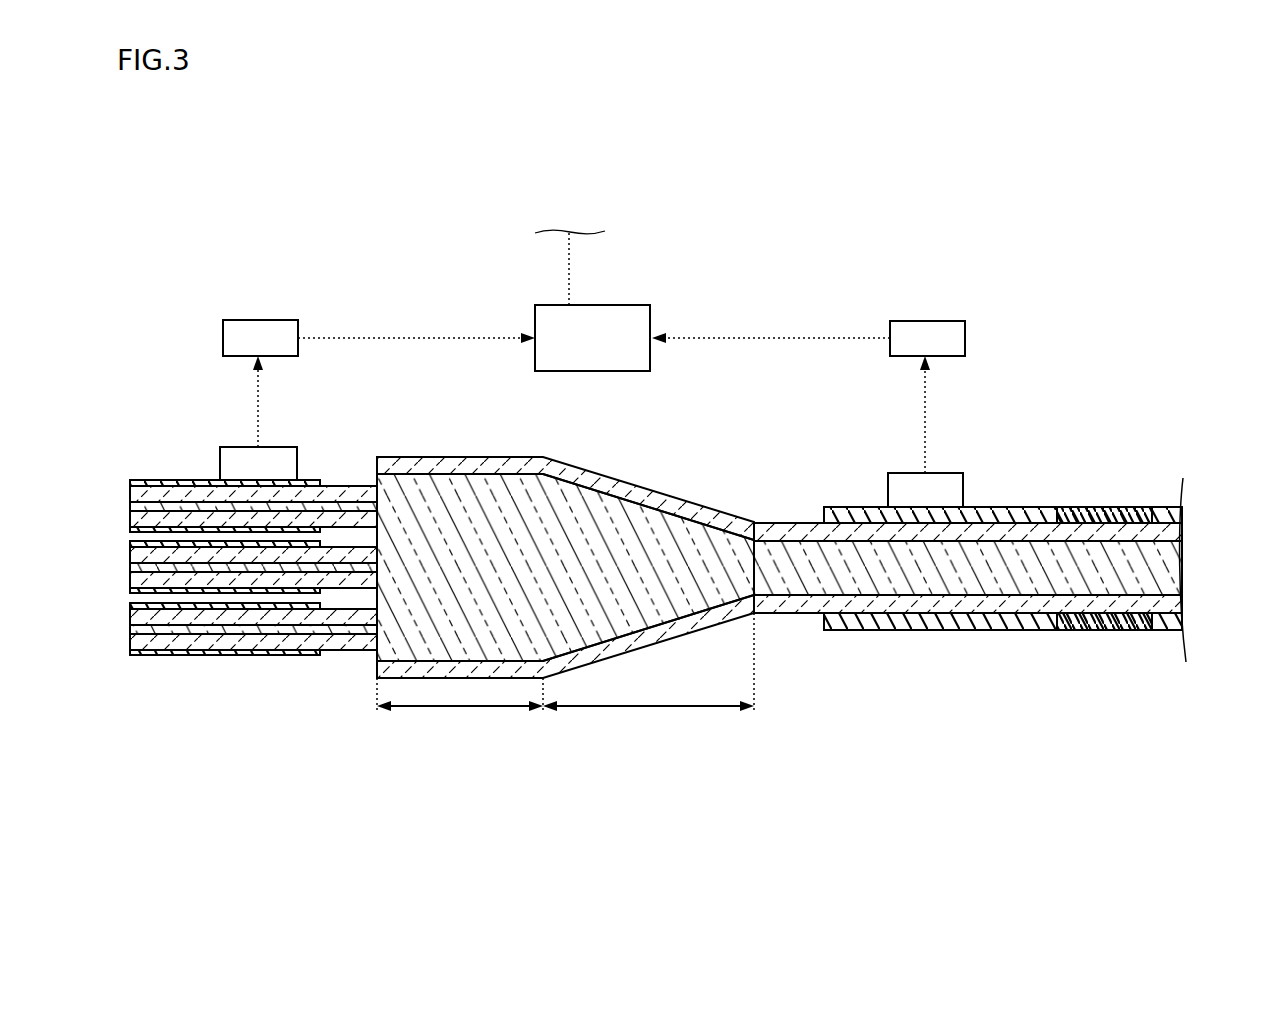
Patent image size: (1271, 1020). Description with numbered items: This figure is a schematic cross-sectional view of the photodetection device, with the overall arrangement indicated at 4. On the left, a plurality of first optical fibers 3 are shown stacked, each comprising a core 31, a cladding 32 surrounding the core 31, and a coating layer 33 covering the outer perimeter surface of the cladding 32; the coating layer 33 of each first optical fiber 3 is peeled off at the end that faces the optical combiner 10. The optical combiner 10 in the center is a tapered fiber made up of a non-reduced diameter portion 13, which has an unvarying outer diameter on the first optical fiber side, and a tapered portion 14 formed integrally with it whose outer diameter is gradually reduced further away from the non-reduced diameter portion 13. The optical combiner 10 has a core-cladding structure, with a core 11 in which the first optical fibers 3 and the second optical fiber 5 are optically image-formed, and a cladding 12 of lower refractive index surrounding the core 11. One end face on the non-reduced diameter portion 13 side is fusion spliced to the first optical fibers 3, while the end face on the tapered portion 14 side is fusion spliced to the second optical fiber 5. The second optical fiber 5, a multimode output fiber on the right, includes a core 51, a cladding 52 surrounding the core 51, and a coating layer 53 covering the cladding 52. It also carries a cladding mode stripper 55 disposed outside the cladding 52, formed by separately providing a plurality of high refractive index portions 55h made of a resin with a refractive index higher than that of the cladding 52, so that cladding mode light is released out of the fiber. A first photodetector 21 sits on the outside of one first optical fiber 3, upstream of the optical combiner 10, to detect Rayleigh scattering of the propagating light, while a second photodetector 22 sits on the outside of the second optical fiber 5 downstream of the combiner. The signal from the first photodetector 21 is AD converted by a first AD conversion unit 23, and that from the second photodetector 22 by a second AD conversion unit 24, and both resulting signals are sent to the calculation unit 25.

The first optical fiber 3 is at (253, 654).
The core 31 is at (265, 633).
The cladding 32 is at (218, 642).
The coating layer 33 is at (165, 655).
The optical fiber connection structure 4 is at (1087, 223).
The second optical fiber 5 is at (970, 609).
The core 51 is at (985, 578).
The cladding 52 is at (937, 605).
The coating layer 53 is at (887, 622).
The cladding mode stripper 55 is at (1073, 495).
The high refractive index portion 55h is at (1097, 506).
The optical combiner 10 is at (565, 515).
The core 11 is at (447, 500).
The cladding 12 is at (400, 462).
The non-reduced diameter portion 13 is at (460, 707).
The tapered portion 14 is at (648, 674).
The first photodetector 21 is at (283, 455).
The second photodetector 22 is at (946, 482).
The first AD conversion unit 23 is at (260, 330).
The second AD conversion unit 24 is at (915, 332).
The calculation unit 25 is at (596, 323).